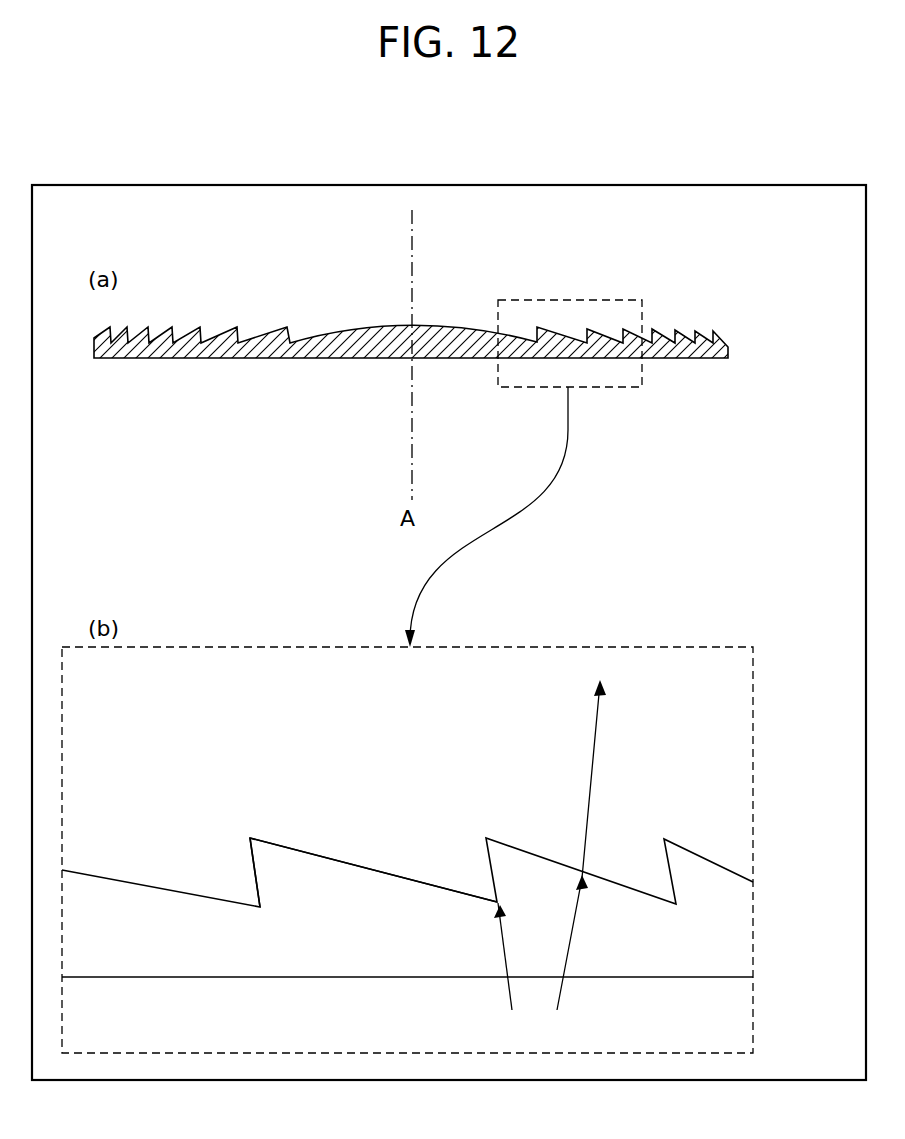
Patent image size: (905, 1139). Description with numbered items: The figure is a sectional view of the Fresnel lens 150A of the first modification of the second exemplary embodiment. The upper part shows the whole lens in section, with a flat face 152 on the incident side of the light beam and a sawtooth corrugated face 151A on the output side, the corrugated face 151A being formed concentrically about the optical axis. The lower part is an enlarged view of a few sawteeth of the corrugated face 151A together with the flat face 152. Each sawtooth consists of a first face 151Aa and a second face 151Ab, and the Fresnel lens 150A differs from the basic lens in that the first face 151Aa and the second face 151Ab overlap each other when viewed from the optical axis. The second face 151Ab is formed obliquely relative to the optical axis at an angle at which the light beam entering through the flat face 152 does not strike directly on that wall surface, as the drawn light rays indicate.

The corrugated face 151A is at (728, 349).
The second face 151Ab is at (251, 860).
The first face 151Aa is at (352, 863).
The Fresnel lens 150A is at (745, 962).
The flat face 152 is at (360, 978).